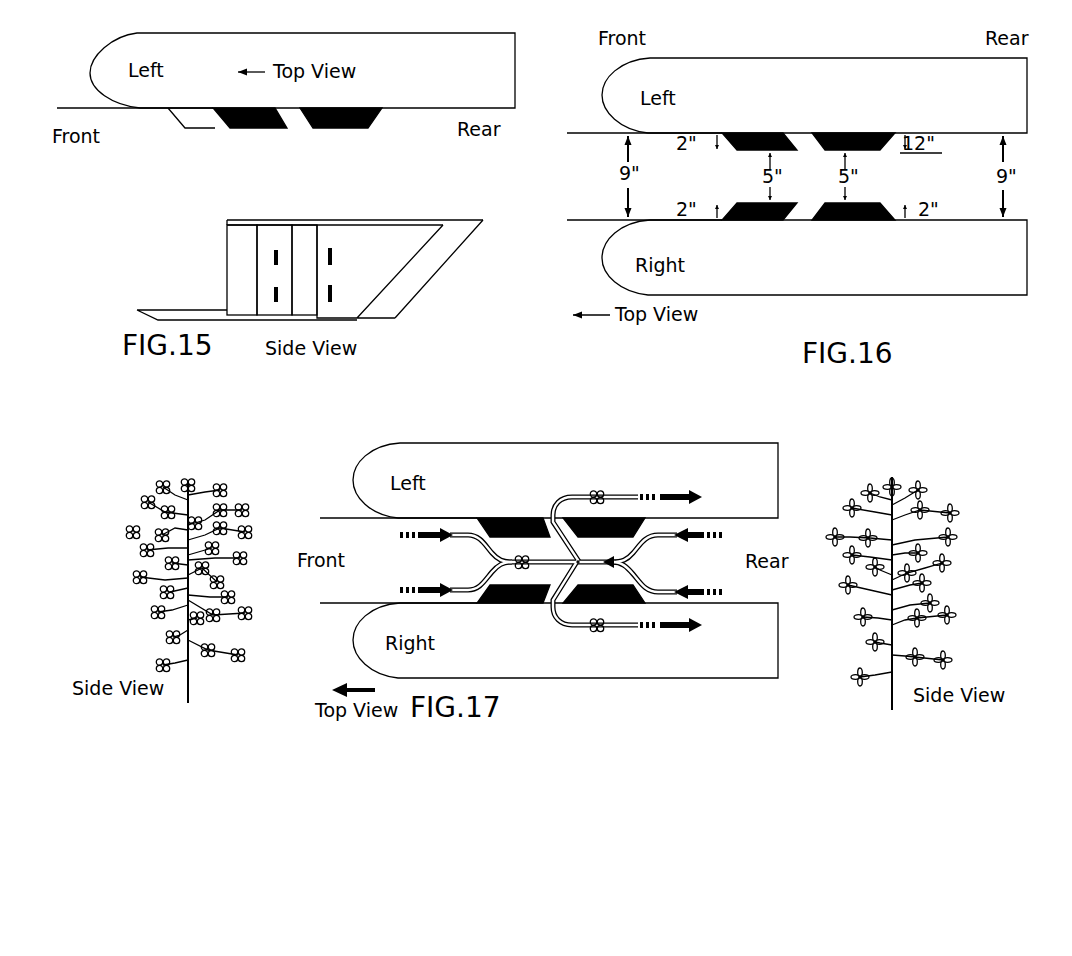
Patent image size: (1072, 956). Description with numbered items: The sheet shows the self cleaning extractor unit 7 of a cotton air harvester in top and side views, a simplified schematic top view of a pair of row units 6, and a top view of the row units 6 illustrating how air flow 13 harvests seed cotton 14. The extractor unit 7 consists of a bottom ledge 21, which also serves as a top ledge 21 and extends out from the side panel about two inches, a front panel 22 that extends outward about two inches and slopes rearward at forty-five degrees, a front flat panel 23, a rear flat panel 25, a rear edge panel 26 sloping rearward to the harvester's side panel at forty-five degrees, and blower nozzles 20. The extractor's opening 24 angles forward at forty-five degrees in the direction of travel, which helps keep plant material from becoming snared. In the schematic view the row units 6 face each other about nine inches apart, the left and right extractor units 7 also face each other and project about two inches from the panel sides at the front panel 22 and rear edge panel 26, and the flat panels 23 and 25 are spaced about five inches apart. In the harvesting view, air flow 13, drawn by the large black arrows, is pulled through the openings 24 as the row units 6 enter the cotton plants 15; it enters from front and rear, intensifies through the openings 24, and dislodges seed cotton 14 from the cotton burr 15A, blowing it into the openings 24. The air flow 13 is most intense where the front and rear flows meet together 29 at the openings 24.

In FIG. 15, the row unit 6 is at (91, 52).
In FIG. 16, the row unit 6 is at (598, 86).
In FIG. 17, the row unit 6 is at (350, 470).
In FIG. 15, the self cleaning extractor unit 7 is at (126, 106).
In FIG. 16, the self cleaning extractor unit 7 is at (636, 176).
In FIG. 17, the self cleaning extractor unit 7 is at (390, 560).
In FIG. 17, the air flow 13 is at (564, 559).
In FIG. 17, the seed cotton 14 is at (517, 541).
In FIG. 17, the cotton plant 15 is at (144, 632).
In FIG. 17, the cotton burr 15A is at (946, 585).
In FIG. 15, the blower nozzles 20 is at (273, 241).
In FIG. 15, the bottom ledge 21 is at (170, 308).
In FIG. 15, the front panel 22 is at (237, 267).
In FIG. 16, the front panel 22 is at (722, 141).
In FIG. 15, the front flat panel 23 is at (263, 264).
In FIG. 16, the front flat panel 23 is at (753, 159).
In FIG. 15, the extractor opening 24 is at (301, 250).
In FIG. 16, the extractor opening 24 is at (800, 131).
In FIG. 17, the extractor opening 24 is at (542, 515).
In FIG. 15, the rear flat panel 25 is at (354, 130).
In FIG. 16, the rear flat panel 25 is at (870, 159).
In FIG. 15, the rear edge panel 26 is at (381, 122).
In FIG. 16, the rear edge panel 26 is at (900, 141).
In FIG. 17, the meeting point of front and rear air flows 29 is at (572, 570).